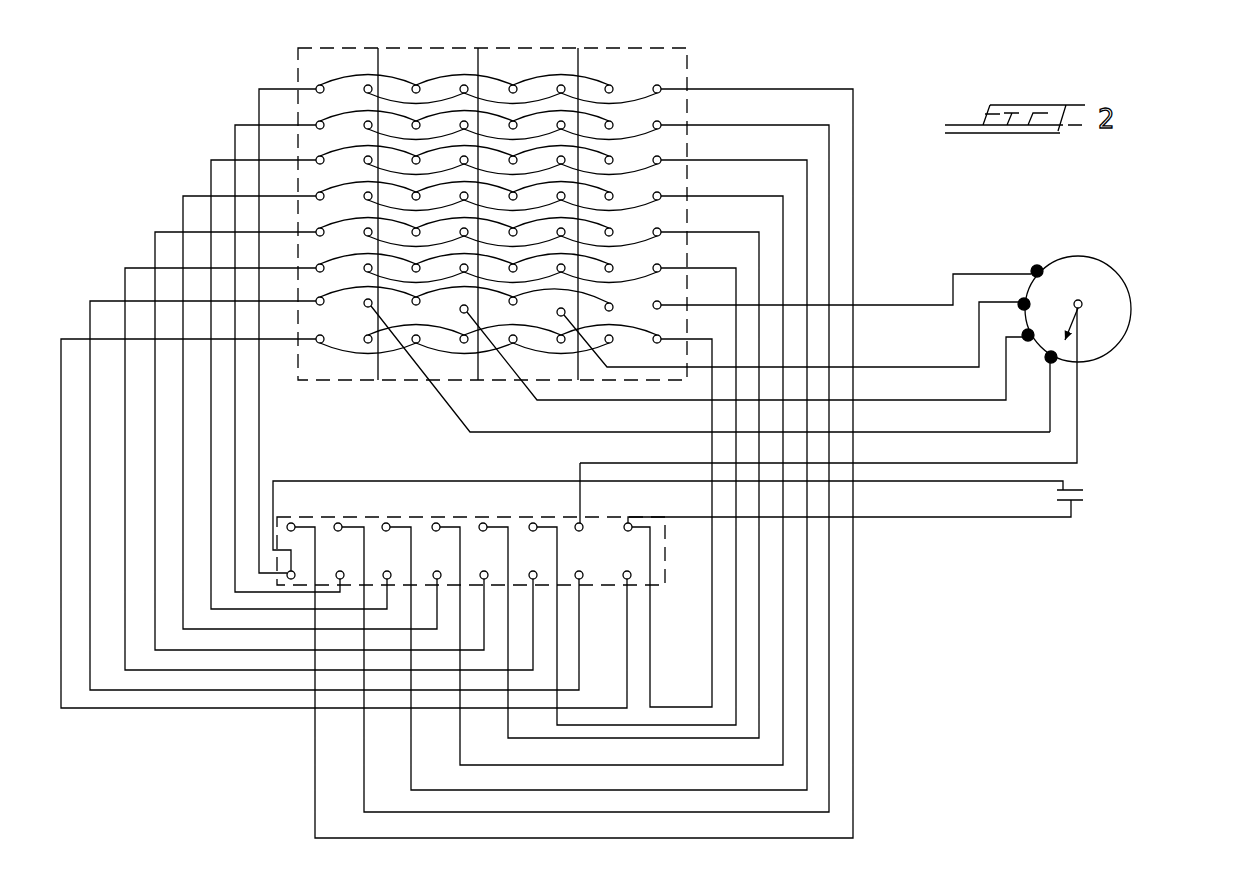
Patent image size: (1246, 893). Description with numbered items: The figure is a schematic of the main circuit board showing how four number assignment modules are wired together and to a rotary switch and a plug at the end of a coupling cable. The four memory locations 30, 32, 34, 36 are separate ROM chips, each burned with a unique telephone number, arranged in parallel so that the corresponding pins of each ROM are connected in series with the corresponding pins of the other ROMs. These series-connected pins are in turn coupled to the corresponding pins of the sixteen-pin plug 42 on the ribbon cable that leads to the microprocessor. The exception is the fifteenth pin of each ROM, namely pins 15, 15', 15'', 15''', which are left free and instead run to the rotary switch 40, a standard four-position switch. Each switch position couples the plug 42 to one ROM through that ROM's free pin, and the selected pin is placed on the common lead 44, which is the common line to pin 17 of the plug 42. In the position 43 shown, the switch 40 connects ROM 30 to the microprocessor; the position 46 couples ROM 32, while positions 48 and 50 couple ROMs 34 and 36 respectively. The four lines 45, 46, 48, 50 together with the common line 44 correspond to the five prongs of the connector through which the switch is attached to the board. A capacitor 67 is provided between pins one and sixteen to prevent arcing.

The fifteenth pin 15 is at (693, 365).
The fifteenth pin 15' is at (740, 359).
The fifteenth pin 15'' is at (786, 364).
The fifteenth pin 15''' is at (833, 349).
The pin 17 of the plug 17 is at (578, 523).
The memory location (ROM) 30 is at (335, 46).
The memory location (ROM) 32 is at (425, 48).
The memory location (ROM) 34 is at (520, 48).
The memory location (ROM) 36 is at (617, 48).
The rotary switch 40 is at (1138, 290).
The 16-pin plug 42 is at (403, 506).
The switch position 43 is at (1058, 356).
The common lead 44 is at (1078, 452).
The line 45 is at (1052, 410).
The switch position 46 is at (1040, 328).
The switch position 48 is at (1036, 298).
The switch position 50 is at (1047, 262).
The capacitor 67 is at (1078, 504).